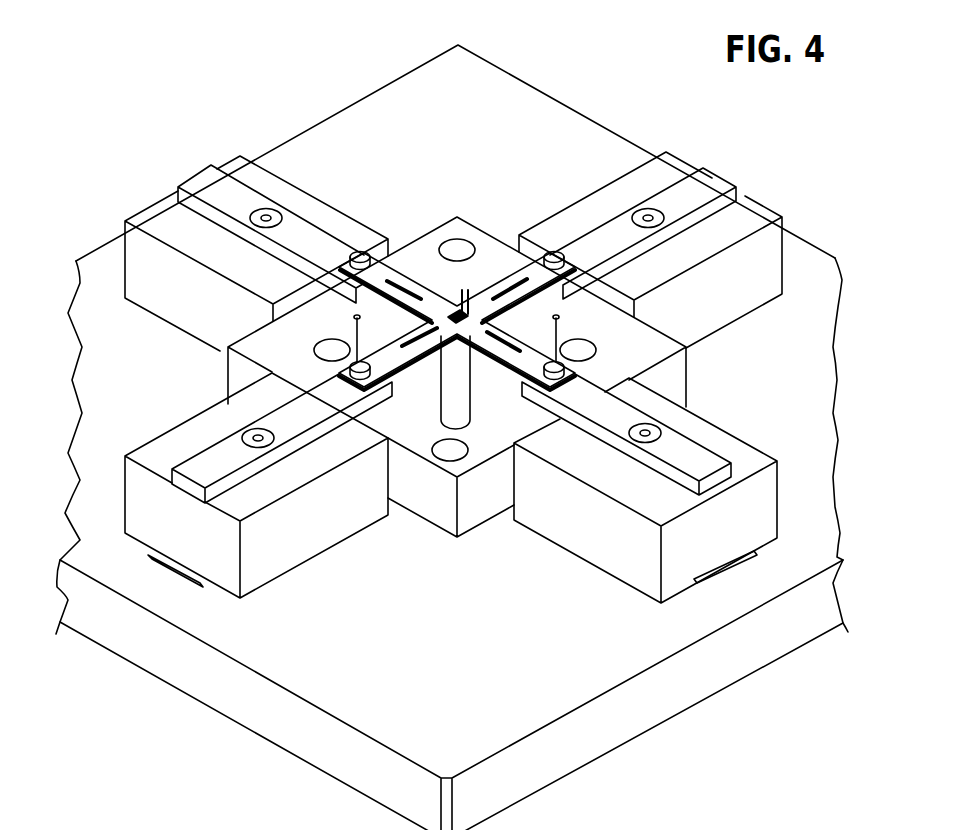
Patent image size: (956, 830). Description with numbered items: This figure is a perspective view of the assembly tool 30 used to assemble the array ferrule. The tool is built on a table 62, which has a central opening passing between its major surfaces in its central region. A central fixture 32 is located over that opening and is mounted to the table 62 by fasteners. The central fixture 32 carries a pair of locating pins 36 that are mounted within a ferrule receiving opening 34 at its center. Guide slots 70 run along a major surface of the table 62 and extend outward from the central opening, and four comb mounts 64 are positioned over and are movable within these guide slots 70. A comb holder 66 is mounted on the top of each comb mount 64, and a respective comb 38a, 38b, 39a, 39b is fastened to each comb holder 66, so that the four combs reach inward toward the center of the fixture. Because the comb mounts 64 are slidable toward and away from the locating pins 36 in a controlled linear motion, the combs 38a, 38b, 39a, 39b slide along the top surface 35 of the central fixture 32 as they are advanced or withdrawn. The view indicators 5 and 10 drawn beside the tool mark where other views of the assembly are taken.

The assembly tool 30 is at (312, 80).
The section line 5 is at (147, 167).
The section line 10 is at (197, 173).
The central fixture 32 is at (692, 352).
The ferrule receiving opening 34 is at (452, 310).
The top surface 35 is at (457, 377).
The locating pins 36 is at (467, 305).
The comb 38a is at (541, 290).
The comb 38b is at (391, 385).
The comb 39a is at (491, 380).
The comb 39b is at (428, 305).
The table 62 is at (452, 437).
The comb mounts 64 is at (453, 377).
The comb holder 66 is at (672, 180).
The guide slots 70 is at (182, 578).